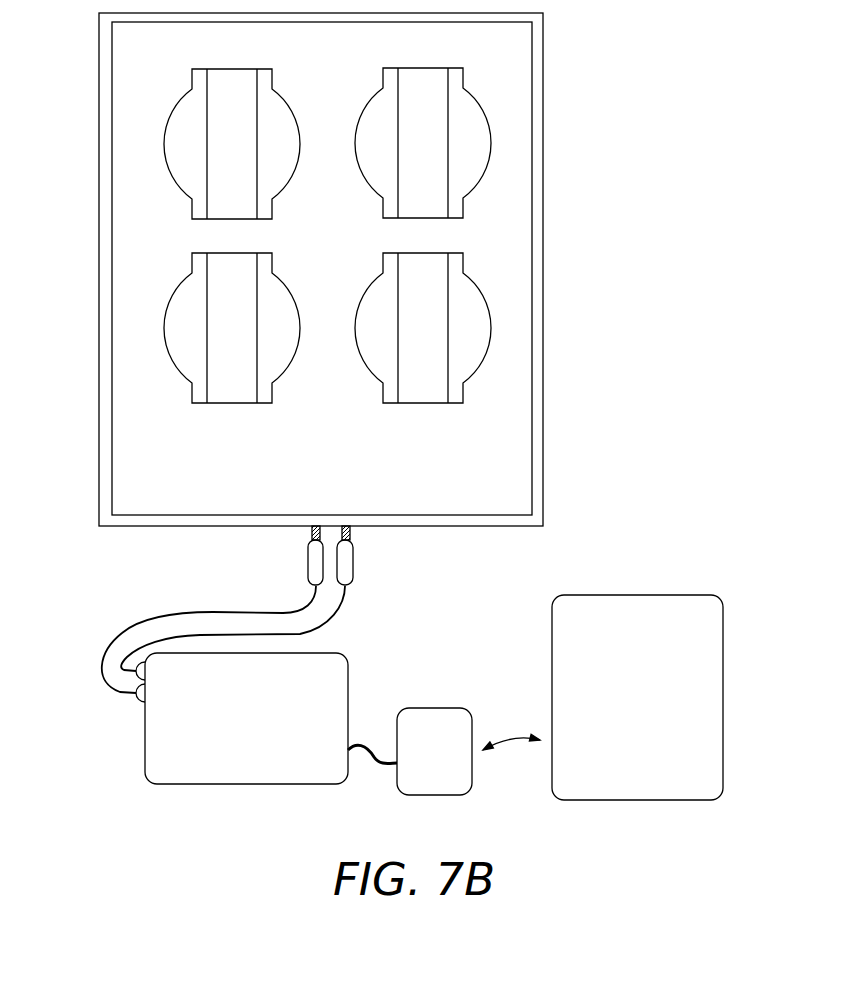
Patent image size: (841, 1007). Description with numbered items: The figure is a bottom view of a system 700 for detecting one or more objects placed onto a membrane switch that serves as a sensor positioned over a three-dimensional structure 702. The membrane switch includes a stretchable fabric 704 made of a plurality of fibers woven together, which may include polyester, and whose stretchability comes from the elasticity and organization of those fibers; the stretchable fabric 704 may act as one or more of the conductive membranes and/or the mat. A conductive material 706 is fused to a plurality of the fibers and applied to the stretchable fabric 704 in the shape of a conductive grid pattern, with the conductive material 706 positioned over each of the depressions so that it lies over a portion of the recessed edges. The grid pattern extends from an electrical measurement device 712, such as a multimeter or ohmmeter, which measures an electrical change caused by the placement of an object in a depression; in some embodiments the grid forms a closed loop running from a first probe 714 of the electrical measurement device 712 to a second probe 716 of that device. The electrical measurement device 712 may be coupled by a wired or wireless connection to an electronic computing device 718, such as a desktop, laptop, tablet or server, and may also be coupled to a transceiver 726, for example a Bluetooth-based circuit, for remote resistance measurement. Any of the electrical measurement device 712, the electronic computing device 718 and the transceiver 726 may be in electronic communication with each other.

The system 700 is at (384, 426).
The 3-dimensional structure 702 is at (112, 182).
The stretchable fabric 704 is at (99, 85).
The conductive material 706 is at (207, 125).
The electrical measurement device 712 is at (247, 784).
The first probe 714 is at (308, 563).
The second probe 716 is at (353, 563).
The electronic computing device 718 is at (637, 595).
The transceiver 726 is at (440, 708).